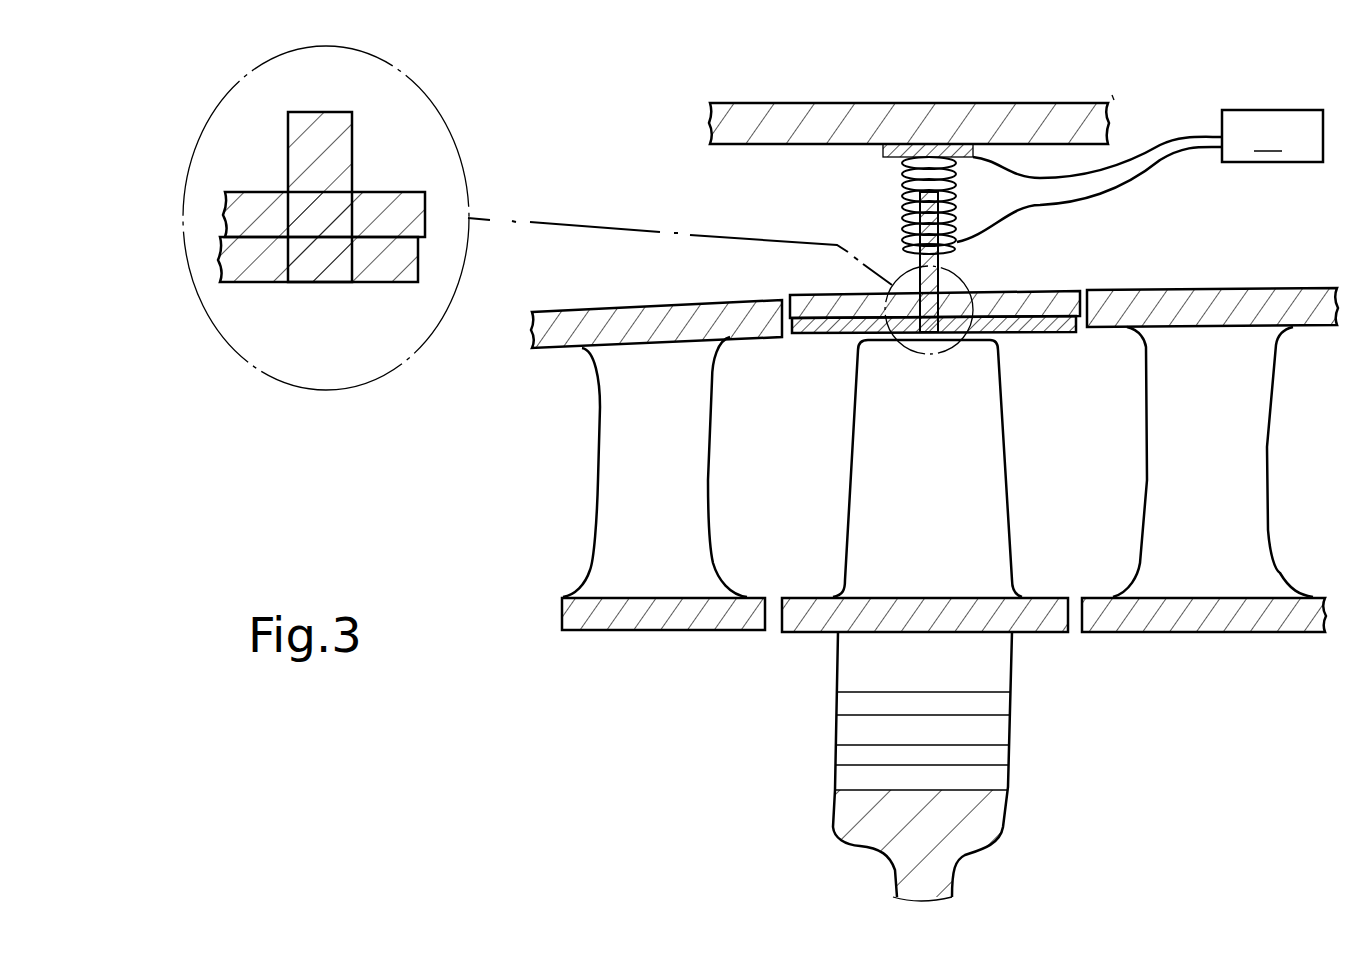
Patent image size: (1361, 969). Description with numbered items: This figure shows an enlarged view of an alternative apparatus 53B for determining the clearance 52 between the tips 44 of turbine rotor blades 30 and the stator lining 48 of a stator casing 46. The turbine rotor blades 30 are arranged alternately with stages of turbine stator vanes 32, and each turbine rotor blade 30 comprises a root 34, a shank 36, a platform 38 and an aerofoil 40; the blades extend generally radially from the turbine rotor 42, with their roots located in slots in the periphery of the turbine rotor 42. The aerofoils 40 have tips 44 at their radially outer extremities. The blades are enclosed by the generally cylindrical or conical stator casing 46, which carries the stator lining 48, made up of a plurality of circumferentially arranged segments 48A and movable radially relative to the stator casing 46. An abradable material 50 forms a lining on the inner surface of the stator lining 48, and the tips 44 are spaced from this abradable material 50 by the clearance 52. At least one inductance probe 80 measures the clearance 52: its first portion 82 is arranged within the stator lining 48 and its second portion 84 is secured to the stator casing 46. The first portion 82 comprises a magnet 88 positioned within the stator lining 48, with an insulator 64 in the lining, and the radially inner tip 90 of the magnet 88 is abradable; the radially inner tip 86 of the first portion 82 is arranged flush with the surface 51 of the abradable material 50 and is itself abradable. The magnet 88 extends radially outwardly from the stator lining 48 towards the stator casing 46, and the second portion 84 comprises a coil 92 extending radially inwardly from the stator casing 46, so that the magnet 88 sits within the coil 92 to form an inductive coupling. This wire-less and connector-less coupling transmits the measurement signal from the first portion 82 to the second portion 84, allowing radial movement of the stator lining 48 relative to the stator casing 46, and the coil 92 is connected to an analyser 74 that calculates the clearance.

The turbine rotor blade 30 is at (990, 528).
The turbine stator vane 32 is at (623, 542).
The root 34 is at (993, 730).
The shank 36 is at (985, 665).
The platform 38 is at (1072, 630).
The aerofoil 40 is at (960, 473).
The turbine rotor 42 is at (970, 817).
The tip 44 is at (985, 340).
The stator casing 46 is at (1070, 110).
The stator lining 48 is at (385, 192).
The segment 48A is at (1013, 295).
The abradable material 50 is at (800, 331).
The surface 51 is at (832, 335).
The clearance 52 is at (980, 332).
The apparatus for determining the clearance 53B is at (1125, 90).
The insulator 64 is at (905, 305).
The analyser 74 is at (1272, 136).
The inductance probe 80 is at (807, 227).
The first portion 82 is at (918, 262).
The second portion 84 is at (900, 195).
The radially inner tip 86 is at (928, 335).
The magnet 88 is at (313, 167).
The radially inner tip of the magnet 90 is at (312, 262).
The coil 92 is at (890, 145).